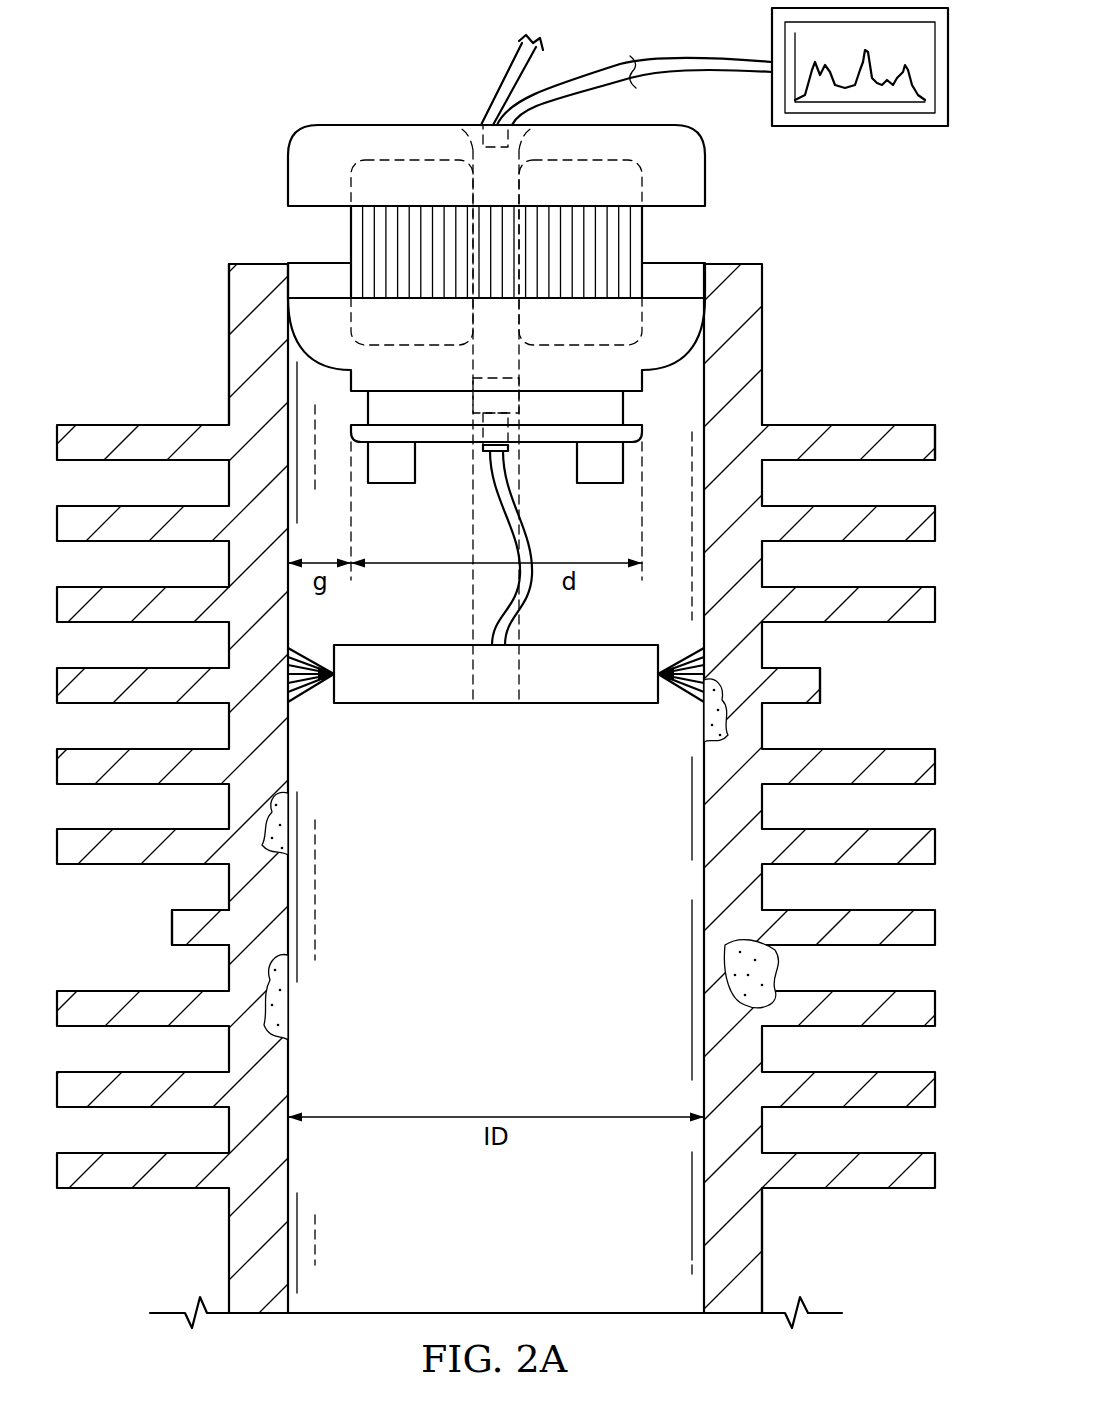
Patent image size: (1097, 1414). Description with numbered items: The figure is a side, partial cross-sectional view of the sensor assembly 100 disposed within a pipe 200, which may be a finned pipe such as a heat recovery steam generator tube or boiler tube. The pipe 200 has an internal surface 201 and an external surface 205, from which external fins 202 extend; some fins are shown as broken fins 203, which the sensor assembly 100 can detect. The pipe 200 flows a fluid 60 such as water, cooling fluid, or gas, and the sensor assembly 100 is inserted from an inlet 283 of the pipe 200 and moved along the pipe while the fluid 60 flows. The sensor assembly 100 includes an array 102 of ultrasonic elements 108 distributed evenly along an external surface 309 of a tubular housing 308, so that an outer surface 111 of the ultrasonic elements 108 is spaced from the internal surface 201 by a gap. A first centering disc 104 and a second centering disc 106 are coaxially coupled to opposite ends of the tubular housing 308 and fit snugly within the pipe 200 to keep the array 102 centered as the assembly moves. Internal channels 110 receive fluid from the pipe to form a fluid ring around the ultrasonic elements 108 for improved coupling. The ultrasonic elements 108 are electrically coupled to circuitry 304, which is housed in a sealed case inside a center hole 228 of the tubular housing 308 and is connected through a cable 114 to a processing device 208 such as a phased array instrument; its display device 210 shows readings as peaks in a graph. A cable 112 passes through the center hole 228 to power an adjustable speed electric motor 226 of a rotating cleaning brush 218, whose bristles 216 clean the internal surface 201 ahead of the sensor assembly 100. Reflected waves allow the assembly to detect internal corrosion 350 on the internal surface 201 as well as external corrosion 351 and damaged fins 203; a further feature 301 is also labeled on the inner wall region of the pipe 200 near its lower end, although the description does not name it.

The sensor assembly 100 is at (252, 73).
The array 102 is at (643, 240).
The first centering disc 104 is at (650, 360).
The second centering disc 106 is at (707, 183).
The ultrasonic elements 108 is at (351, 222).
The internal channels 110 is at (600, 484).
The outer surface 111 is at (351, 240).
The cable 112 is at (497, 80).
The cable 114 is at (662, 57).
The pipe 200 is at (772, 320).
The internal surface 201 is at (292, 760).
The external fins 202 is at (903, 432).
The broken fins 203 is at (172, 928).
The external surface 205 is at (228, 362).
The processing device 208 is at (895, 127).
The display device 210 is at (832, 106).
The bristles 216 is at (303, 694).
The rotating cleaning brush 218 is at (560, 704).
The adjustable speed electric motor 226 is at (493, 704).
The center hole 228 is at (524, 200).
The inlet 283 is at (302, 266).
The coating 301 is at (290, 1165).
The circuitry 304 is at (513, 308).
The tubular housing 308 is at (415, 157).
The external surface 309 is at (360, 162).
The internal corrosion 350 is at (284, 1003).
The external corrosion 351 is at (760, 958).
The fluid 60 is at (480, 1055).